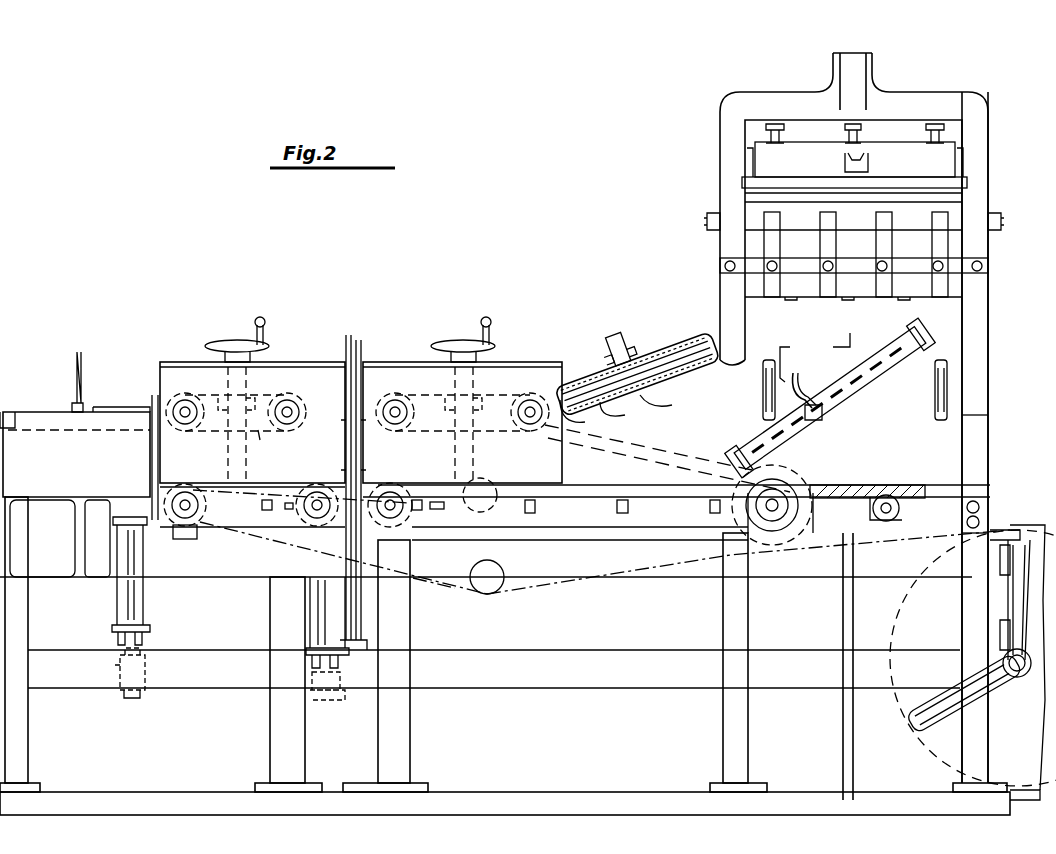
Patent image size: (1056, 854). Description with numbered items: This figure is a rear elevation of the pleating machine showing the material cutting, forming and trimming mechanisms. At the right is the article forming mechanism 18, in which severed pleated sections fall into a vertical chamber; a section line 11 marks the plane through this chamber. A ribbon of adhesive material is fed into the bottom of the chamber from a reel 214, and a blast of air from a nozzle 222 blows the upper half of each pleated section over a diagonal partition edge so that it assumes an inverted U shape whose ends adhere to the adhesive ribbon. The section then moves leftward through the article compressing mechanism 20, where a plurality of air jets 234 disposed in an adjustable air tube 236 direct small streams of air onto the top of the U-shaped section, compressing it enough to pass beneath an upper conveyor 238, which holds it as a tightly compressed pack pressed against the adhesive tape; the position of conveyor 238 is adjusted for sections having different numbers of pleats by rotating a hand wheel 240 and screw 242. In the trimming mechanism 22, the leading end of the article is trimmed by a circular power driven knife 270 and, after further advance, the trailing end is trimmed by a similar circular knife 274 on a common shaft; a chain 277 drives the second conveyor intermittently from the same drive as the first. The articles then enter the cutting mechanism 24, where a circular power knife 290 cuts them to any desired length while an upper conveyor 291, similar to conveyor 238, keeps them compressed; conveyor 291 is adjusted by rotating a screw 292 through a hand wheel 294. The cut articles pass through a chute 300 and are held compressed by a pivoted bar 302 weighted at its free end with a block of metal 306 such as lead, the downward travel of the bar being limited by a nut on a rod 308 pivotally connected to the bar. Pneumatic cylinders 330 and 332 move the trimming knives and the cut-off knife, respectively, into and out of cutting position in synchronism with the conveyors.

The section line 11 is at (836, 36).
The article forming mechanism 18 is at (902, 430).
The article compressing mechanism 20 is at (560, 362).
The article trimming mechanism 22 is at (353, 368).
The article cutting mechanism 24 is at (168, 360).
The reel 214 is at (961, 662).
The nozzle 222 is at (806, 392).
The air jets 234 is at (668, 390).
The adjustable air tube 236 is at (672, 352).
The conveyor 238 is at (497, 440).
The hand wheel 240 is at (452, 340).
The screw 242 is at (456, 452).
The circular power driven knife 270 is at (372, 400).
The circular power driven knife 274 is at (344, 406).
The chain 277 is at (628, 560).
The circular power knife 290 is at (154, 400).
The conveyor 291 is at (260, 435).
The screw 292 is at (224, 398).
The hand wheel 294 is at (222, 340).
The chute 300 is at (98, 466).
The bar 302 is at (38, 428).
The block of metal 306 is at (103, 410).
The rod 308 is at (76, 367).
The pneumatic cylinder 330 is at (312, 610).
The pneumatic cylinder 332 is at (118, 598).